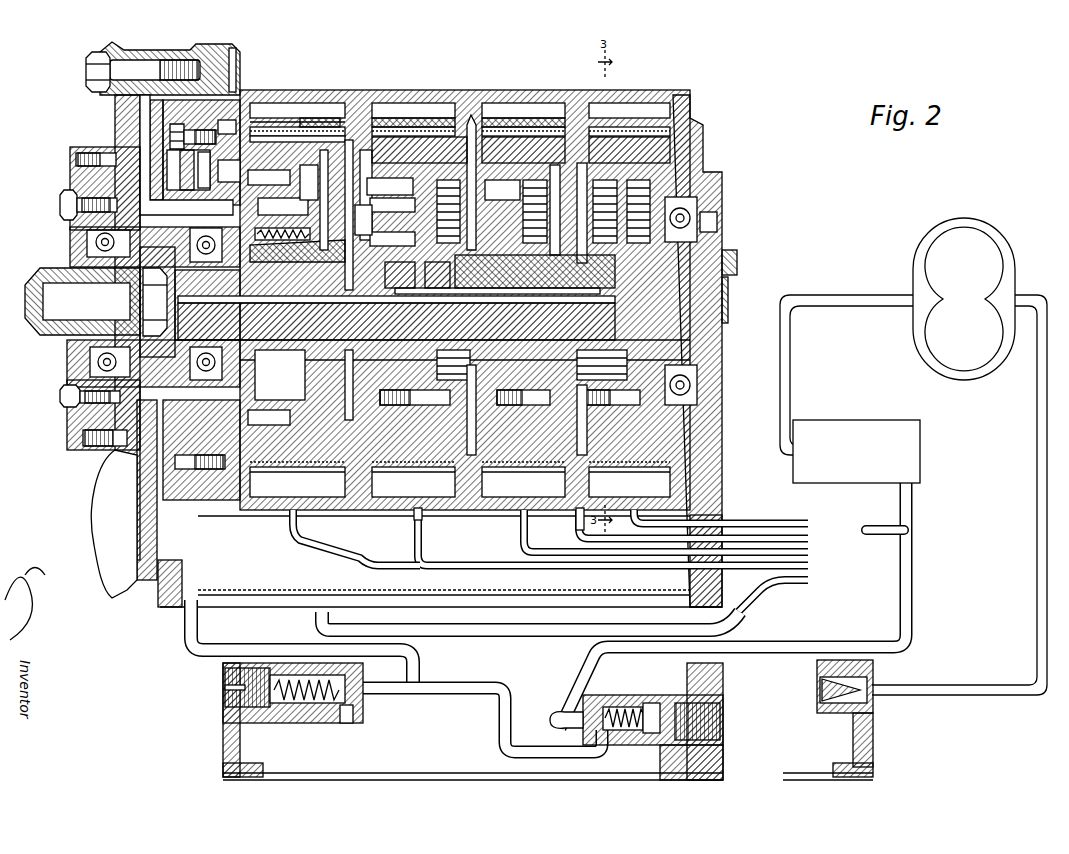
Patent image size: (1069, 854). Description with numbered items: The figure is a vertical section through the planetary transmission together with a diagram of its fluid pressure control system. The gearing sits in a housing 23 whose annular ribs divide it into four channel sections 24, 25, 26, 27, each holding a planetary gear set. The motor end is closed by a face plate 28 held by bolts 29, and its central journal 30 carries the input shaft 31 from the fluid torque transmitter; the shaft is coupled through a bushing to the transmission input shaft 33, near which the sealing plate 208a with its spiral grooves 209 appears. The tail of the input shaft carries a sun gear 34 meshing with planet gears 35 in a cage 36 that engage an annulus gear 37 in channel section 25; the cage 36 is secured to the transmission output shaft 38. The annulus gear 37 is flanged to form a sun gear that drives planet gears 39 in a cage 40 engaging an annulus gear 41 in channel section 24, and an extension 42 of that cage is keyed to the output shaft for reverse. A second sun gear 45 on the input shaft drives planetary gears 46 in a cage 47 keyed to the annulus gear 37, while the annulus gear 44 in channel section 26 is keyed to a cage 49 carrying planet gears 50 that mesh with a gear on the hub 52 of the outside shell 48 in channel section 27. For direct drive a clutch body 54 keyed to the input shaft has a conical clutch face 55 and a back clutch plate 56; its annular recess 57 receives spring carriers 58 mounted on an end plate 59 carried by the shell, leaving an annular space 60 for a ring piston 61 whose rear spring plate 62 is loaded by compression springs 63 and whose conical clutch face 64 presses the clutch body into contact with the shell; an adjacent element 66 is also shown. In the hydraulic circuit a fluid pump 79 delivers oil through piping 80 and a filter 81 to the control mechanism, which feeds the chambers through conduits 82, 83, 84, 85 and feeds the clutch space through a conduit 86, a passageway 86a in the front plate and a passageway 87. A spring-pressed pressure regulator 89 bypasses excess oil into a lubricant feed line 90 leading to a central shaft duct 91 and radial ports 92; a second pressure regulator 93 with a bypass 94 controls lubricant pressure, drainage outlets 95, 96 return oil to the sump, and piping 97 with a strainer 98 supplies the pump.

The housing 23 is at (450, 117).
The channel section 24 is at (615, 104).
The channel section 25 is at (505, 104).
The channel section 26 is at (418, 104).
The channel section 27 is at (285, 104).
The face plate 28 is at (160, 64).
The bolts 29 is at (222, 50).
The central journal 30 is at (87, 240).
The input shaft 31 is at (50, 282).
The transmission input shaft 33 is at (396, 321).
The sun gear 34 is at (535, 271).
The planet gears 35 is at (523, 151).
The cage 36 is at (553, 186).
The annulus gear 37 is at (528, 140).
The transmission output shaft 38 is at (737, 256).
The planet gears 39 is at (629, 151).
The cage 40 is at (613, 213).
The annulus gear 41 is at (672, 104).
The extension 42 is at (737, 270).
The annulus gear 44 is at (419, 150).
The second sun gear 45 is at (437, 275).
The planetary gears 46 is at (415, 213).
The cage 47 is at (473, 118).
The outside shell 48 is at (228, 120).
The cage 49 is at (368, 152).
The planet gears 50 is at (364, 220).
The hub 52 is at (400, 275).
The clutch body 54 is at (297, 251).
The conical clutch face 55 is at (322, 122).
The back clutch plate 56 is at (336, 136).
The annular recess 57 is at (282, 234).
The spring carriers 58 is at (283, 206).
The end plate 59 is at (178, 160).
The annular space 60 is at (205, 168).
The ring piston 61 is at (267, 201).
The rear spring plate 62 is at (230, 174).
The compression springs 63 is at (390, 186).
The conical clutch face 64 is at (310, 117).
The passage 66 is at (352, 140).
The fluid pump 79 is at (964, 299).
The piping 80 is at (781, 360).
The filter 81 is at (862, 428).
The conduit 82 is at (633, 514).
The conduit 83 is at (522, 513).
The conduit 84 is at (414, 514).
The conduit 85 is at (292, 515).
The conduit 86 is at (237, 52).
The passageway 86a is at (145, 110).
The passageway 87 is at (95, 185).
The pressure regulator 89 is at (640, 705).
The lubricant feed line 90 is at (503, 733).
The central shaft duct 91 is at (396, 300).
The radial ports 92 is at (462, 293).
The pressure regulator 93 is at (285, 700).
The bypass 94 is at (350, 724).
The outlet 95 is at (412, 514).
The outlet 96 is at (577, 514).
The piping 97 is at (1036, 495).
The filter or strainer 98 is at (845, 702).
The flat plate 208a is at (95, 430).
The spiral grooves 209 is at (80, 388).